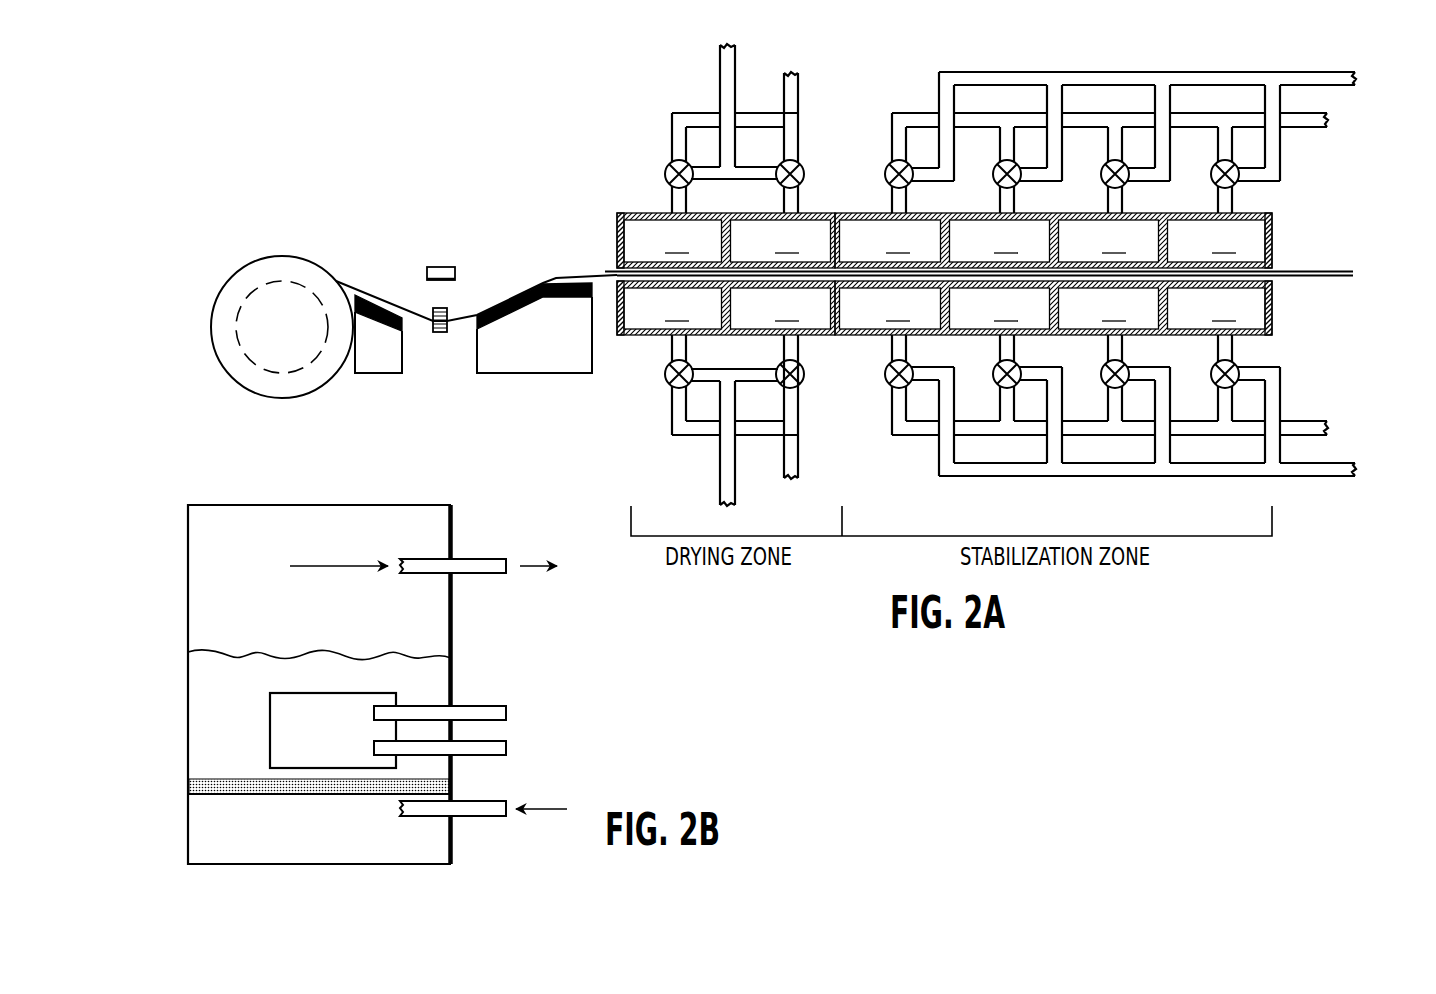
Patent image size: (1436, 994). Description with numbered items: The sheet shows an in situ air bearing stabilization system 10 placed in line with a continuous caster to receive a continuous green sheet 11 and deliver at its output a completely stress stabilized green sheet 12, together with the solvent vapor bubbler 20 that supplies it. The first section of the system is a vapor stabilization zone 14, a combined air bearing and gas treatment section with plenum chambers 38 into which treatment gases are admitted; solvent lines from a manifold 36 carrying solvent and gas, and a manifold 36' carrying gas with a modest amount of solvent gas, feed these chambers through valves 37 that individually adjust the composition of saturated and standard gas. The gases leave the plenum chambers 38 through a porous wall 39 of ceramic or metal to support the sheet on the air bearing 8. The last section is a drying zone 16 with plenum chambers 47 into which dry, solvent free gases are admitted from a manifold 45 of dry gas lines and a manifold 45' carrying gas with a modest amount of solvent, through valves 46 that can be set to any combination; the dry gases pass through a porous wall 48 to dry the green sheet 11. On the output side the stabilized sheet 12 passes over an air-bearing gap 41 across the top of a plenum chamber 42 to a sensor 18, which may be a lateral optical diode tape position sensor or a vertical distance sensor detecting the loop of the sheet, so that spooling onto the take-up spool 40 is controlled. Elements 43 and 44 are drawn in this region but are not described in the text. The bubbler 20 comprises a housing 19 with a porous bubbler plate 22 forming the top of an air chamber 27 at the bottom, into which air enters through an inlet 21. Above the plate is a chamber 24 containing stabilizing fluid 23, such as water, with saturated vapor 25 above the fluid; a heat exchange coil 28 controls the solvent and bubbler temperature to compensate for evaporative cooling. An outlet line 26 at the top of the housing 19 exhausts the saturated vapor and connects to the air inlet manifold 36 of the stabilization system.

In FIG. 2A, the air bearing 8 is at (1283, 288).
In FIG. 2A, the in situ air bearing stabilization system 10 is at (982, 63).
In FIG. 2A, the continuous green sheet 11 is at (1333, 272).
In FIG. 2A, the stress stabilized green sheet 12 is at (603, 275).
In FIG. 2A, the vapor stabilization zone 14 is at (1063, 482).
In FIG. 2A, the drying zone 16 is at (668, 452).
In FIG. 2A, the sensor 18 is at (427, 248).
In FIG. 2B, the housing 19 is at (454, 611).
In FIG. 2B, the bubbler 20 is at (348, 494).
In FIG. 2B, the inlet 21 is at (477, 808).
In FIG. 2B, the porous bubbler plate 22 is at (191, 784).
In FIG. 2B, the stabilizing fluid 23 is at (204, 666).
In FIG. 2B, the chamber 24 is at (180, 696).
In FIG. 2B, the saturated vapor 25 is at (210, 542).
In FIG. 2B, the outlet line 26 is at (480, 558).
In FIG. 2B, the air chamber 27 is at (203, 847).
In FIG. 2B, the heat exchange coil 28 is at (499, 748).
In FIG. 2A, the manifold 36 is at (1133, 274).
In FIG. 2A, the manifold 36' is at (1177, 275).
In FIG. 2A, the valves 37 is at (1000, 186).
In FIG. 2A, the plenum chambers 38 is at (1053, 274).
In FIG. 2A, the porous wall 39 is at (1250, 260).
In FIG. 2A, the take-up spool 40 is at (317, 263).
In FIG. 2A, the air-bearing gap 41 is at (588, 283).
In FIG. 2A, the plenum chamber 42 is at (560, 342).
In FIG. 2A, the web guide 43 is at (448, 310).
In FIG. 2A, the sensor 44 is at (448, 267).
In FIG. 2A, the manifold 45 is at (696, 275).
In FIG. 2A, the manifold 45' is at (828, 275).
In FIG. 2A, the valves 46 is at (780, 183).
In FIG. 2A, the plenum chambers 47 is at (726, 274).
In FIG. 2A, the porous wall 48 is at (650, 262).